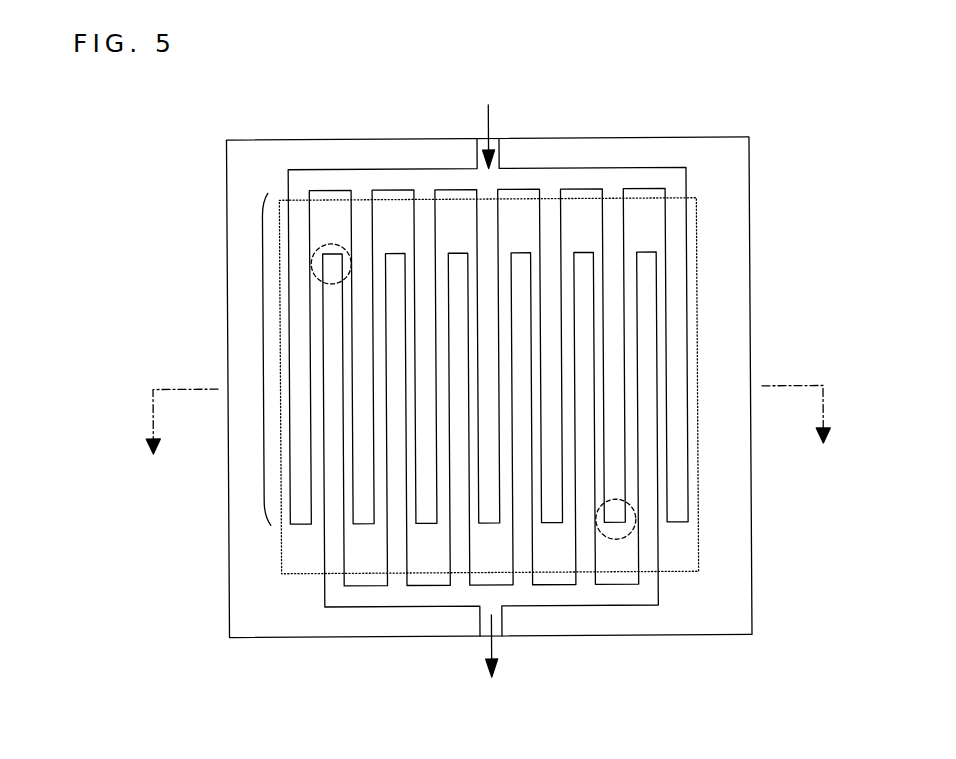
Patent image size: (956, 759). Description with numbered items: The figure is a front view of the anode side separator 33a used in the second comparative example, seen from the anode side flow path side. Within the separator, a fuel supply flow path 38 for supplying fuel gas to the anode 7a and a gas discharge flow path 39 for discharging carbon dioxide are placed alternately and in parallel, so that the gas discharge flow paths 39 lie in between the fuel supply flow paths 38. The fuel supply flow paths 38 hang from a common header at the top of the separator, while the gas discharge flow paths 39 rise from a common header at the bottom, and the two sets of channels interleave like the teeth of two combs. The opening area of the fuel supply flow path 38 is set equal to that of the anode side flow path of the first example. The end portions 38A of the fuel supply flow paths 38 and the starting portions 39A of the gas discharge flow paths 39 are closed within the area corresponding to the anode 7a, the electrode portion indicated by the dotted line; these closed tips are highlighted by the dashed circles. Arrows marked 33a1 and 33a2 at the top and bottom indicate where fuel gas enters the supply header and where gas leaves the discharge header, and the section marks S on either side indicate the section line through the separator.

The anode 7a is at (282, 573).
The anode side separator 33a is at (698, 209).
The first terminal 33a1 is at (500, 137).
The second terminal 33a2 is at (479, 637).
The fuel supply flow path 38 is at (263, 305).
The end portion of fuel supply flow path 38A is at (618, 541).
The gas discharge flow path 39 is at (665, 520).
The starting portion of gas discharge flow path 39A is at (331, 243).
The section line S is at (489, 419).